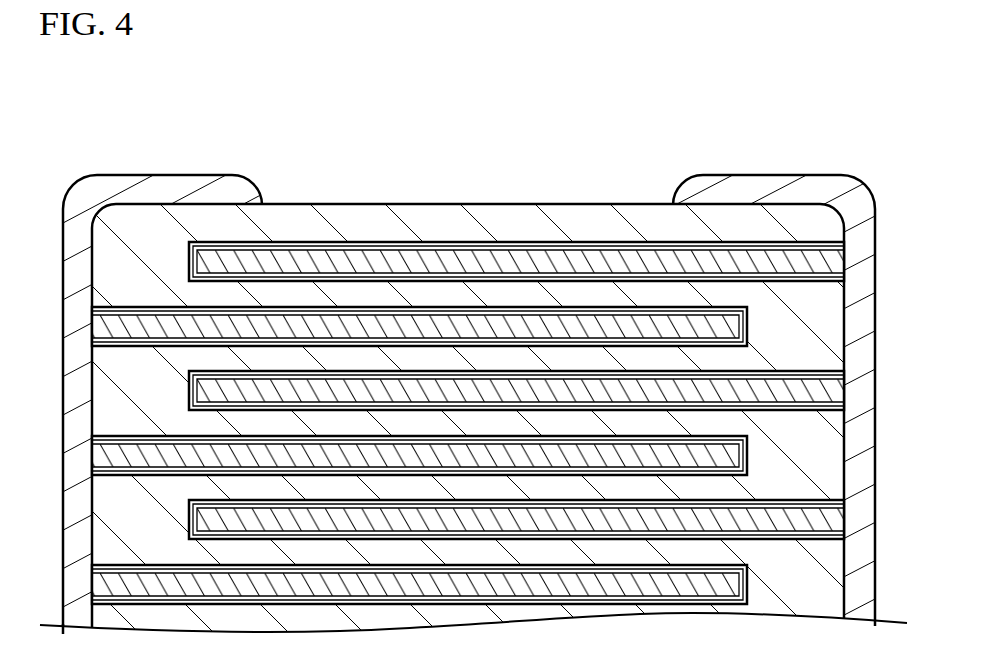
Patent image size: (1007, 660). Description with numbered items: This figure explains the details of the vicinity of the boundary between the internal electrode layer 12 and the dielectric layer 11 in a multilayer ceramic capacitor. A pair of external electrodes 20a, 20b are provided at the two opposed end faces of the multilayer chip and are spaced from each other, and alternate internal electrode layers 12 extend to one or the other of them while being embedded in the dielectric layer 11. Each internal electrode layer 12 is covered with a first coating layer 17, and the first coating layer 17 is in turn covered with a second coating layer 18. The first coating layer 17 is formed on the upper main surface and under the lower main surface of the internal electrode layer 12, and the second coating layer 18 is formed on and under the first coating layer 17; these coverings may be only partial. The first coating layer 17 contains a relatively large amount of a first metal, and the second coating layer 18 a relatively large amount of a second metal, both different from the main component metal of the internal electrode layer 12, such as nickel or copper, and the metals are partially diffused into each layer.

The external electrode 20a is at (173, 182).
The external electrode 20b is at (820, 182).
The dielectric layer 11 is at (680, 358).
The internal electrode layer 12 is at (837, 391).
The first coating layer 17 is at (830, 405).
The second coating layer 18 is at (833, 409).